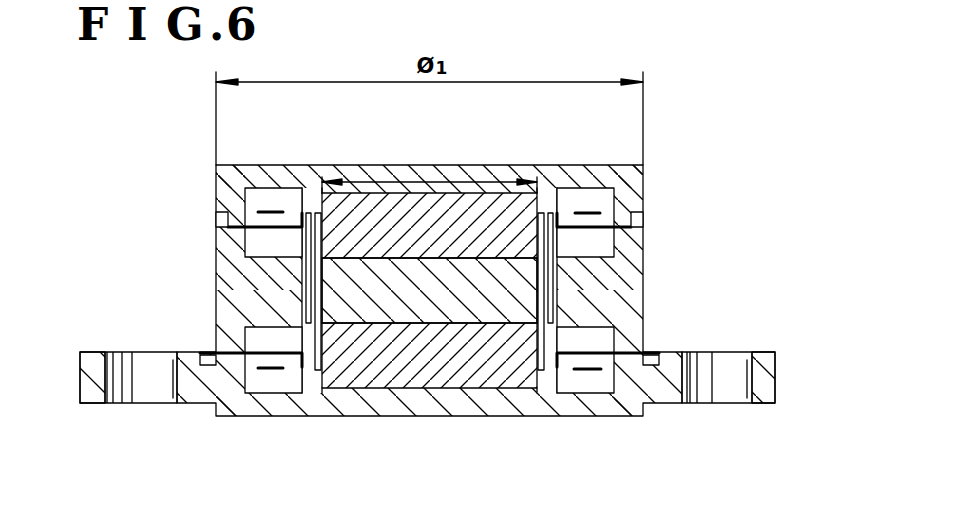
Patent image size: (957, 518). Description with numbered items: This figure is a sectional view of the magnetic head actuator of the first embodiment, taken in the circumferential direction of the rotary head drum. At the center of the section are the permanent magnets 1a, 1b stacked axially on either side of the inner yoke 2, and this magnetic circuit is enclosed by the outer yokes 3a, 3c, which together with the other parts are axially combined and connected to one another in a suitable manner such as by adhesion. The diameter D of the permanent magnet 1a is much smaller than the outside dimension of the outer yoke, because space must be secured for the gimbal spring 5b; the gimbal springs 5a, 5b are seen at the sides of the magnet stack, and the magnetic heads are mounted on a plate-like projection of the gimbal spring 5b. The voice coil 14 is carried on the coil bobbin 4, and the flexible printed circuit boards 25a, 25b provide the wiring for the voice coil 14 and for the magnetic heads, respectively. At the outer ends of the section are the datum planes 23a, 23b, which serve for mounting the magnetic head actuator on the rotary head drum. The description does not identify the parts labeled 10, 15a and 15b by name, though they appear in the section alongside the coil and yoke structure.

The permanent magnet 1a is at (359, 218).
The permanent magnet 1b is at (393, 357).
The inner yoke 2 is at (502, 292).
The outer yoke 3a is at (500, 173).
The outer yoke 3c is at (507, 398).
The coil bobbin 4 is at (228, 230).
The gimbal spring 5a is at (618, 232).
The gimbal spring 5b is at (587, 343).
The plate 10 is at (318, 300).
The voice coil 14 is at (306, 285).
The upper left coil 15a is at (300, 195).
The lower left coil 15b is at (300, 373).
The flexible printed circuit board 25a is at (587, 212).
The flexible printed circuit board 25b is at (587, 368).
The datum plane 23a is at (92, 352).
The datum plane 23b is at (763, 352).
The diameter of the permanent magnet D is at (428, 178).